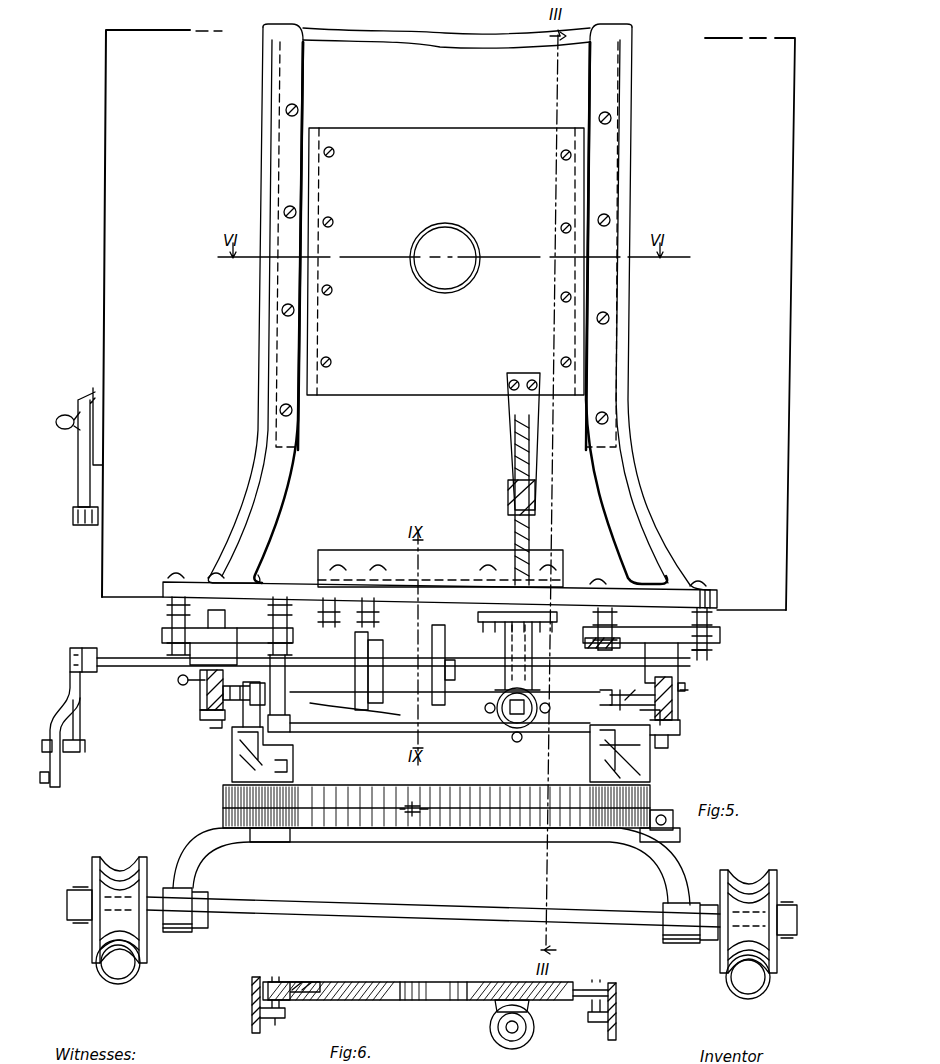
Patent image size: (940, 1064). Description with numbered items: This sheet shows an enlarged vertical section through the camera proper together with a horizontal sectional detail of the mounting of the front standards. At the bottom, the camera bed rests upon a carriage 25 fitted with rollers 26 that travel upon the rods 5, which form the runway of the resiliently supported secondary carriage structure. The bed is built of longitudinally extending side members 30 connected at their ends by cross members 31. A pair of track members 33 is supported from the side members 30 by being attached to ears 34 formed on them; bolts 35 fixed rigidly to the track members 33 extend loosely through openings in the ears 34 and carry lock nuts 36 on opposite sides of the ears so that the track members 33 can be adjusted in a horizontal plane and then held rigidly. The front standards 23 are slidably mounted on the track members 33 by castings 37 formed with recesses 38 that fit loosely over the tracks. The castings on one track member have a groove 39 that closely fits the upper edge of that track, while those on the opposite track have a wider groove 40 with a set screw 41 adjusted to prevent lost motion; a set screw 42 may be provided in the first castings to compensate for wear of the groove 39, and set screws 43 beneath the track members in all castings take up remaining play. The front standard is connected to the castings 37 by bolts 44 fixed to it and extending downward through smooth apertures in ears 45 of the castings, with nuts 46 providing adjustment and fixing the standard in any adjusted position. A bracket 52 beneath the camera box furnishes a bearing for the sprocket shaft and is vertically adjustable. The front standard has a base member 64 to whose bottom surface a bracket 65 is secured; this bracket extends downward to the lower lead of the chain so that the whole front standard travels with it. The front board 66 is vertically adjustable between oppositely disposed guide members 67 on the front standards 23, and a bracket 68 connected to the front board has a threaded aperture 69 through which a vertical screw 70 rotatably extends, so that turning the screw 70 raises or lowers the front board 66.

In FIG. 5, the rods 5 is at (120, 982).
In FIG. 5, the front standards 23 is at (262, 482).
In FIG. 6, the front standards 23 is at (257, 1017).
In FIG. 5, the carriage 25 is at (676, 872).
In FIG. 5, the rollers 26 is at (95, 945).
In FIG. 5, the side members 30 is at (640, 760).
In FIG. 5, the cross members 31 is at (565, 720).
In FIG. 5, the track members 33 is at (215, 712).
In FIG. 5, the ears 34 is at (640, 728).
In FIG. 5, the bolts 35 is at (648, 700).
In FIG. 5, the lock nuts 36 is at (608, 692).
In FIG. 5, the castings 37 is at (225, 648).
In FIG. 5, the recesses 38 is at (672, 712).
In FIG. 5, the groove 39 is at (190, 672).
In FIG. 5, the groove 40 is at (662, 680).
In FIG. 5, the set screw 41 is at (686, 688).
In FIG. 5, the set screw 42 is at (205, 690).
In FIG. 5, the set screws 43 is at (665, 740).
In FIG. 5, the bolts 44 is at (612, 628).
In FIG. 5, the ears 45 is at (590, 650).
In FIG. 5, the nuts 46 is at (712, 640).
In FIG. 5, the bracket 52 is at (462, 640).
In FIG. 5, the base member 64 is at (436, 570).
In FIG. 5, the bracket 65 is at (365, 628).
In FIG. 5, the front board 66 is at (425, 135).
In FIG. 6, the front board 66 is at (335, 1001).
In FIG. 5, the guide members 67 is at (313, 100).
In FIG. 6, the guide members 67 is at (295, 982).
In FIG. 5, the bracket 68 is at (512, 415).
In FIG. 5, the threaded aperture 69 is at (536, 500).
In FIG. 5, the screw 70 is at (514, 462).